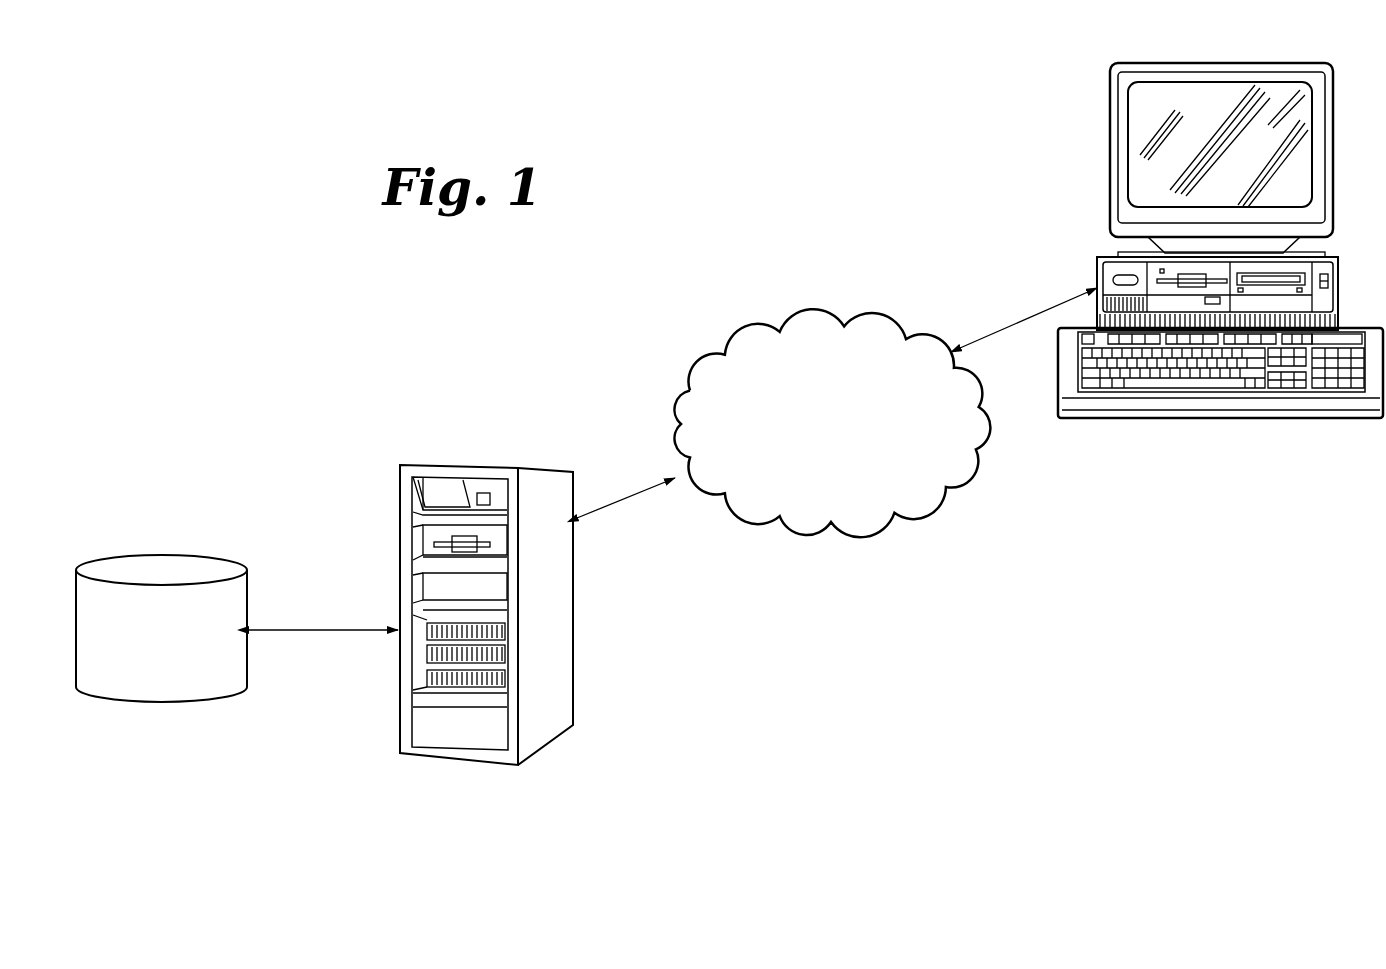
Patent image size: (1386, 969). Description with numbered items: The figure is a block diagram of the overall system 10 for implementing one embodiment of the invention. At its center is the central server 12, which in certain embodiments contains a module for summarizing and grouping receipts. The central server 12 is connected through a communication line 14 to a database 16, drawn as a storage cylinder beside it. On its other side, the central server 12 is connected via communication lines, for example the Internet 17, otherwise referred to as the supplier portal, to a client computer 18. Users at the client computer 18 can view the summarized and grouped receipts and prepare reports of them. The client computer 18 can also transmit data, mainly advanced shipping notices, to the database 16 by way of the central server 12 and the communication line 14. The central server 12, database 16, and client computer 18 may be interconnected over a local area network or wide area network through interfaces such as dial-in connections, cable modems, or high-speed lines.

The overall system 10 is at (1063, 588).
The central server 12 is at (463, 463).
The communication line 14 is at (330, 628).
The database 16 is at (166, 555).
The Internet 17 is at (807, 308).
The client computer 18 is at (1110, 157).